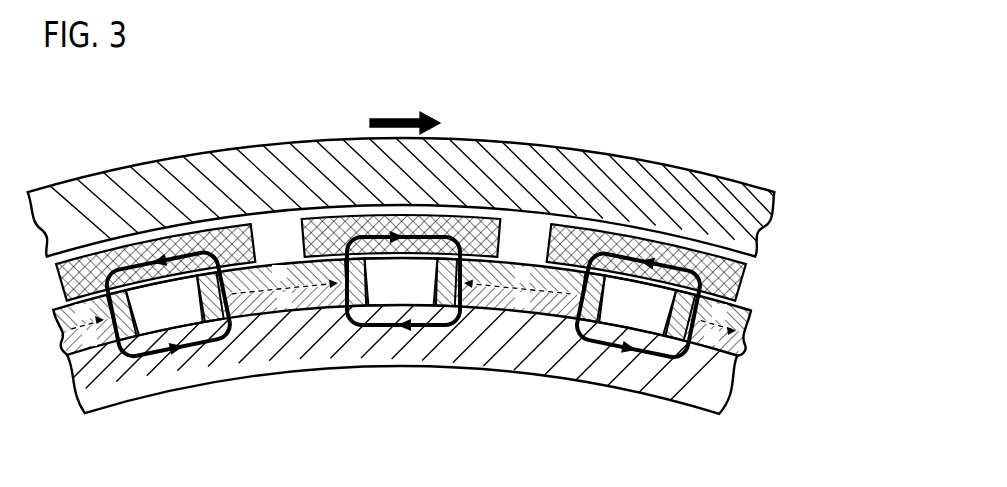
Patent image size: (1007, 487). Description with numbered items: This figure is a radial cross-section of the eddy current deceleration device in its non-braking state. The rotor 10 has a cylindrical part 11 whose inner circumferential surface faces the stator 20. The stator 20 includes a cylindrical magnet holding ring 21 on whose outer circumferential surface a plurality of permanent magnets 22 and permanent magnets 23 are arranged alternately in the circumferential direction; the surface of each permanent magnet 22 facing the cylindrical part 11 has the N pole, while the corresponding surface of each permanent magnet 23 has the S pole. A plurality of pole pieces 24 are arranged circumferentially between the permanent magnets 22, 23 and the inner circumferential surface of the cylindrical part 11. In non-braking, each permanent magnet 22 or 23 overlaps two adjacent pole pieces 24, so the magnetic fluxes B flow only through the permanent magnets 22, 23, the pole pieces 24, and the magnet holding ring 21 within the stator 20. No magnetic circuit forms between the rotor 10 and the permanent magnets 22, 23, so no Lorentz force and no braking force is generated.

The rotor 10 is at (451, 191).
The cylindrical part 11 is at (728, 183).
The pole piece 24 is at (143, 242).
The stator 20 is at (457, 351).
The magnet holding ring 21 is at (652, 385).
The permanent magnet 22 is at (317, 302).
The permanent magnet 23 is at (112, 340).
The magnetic flux B is at (192, 350).